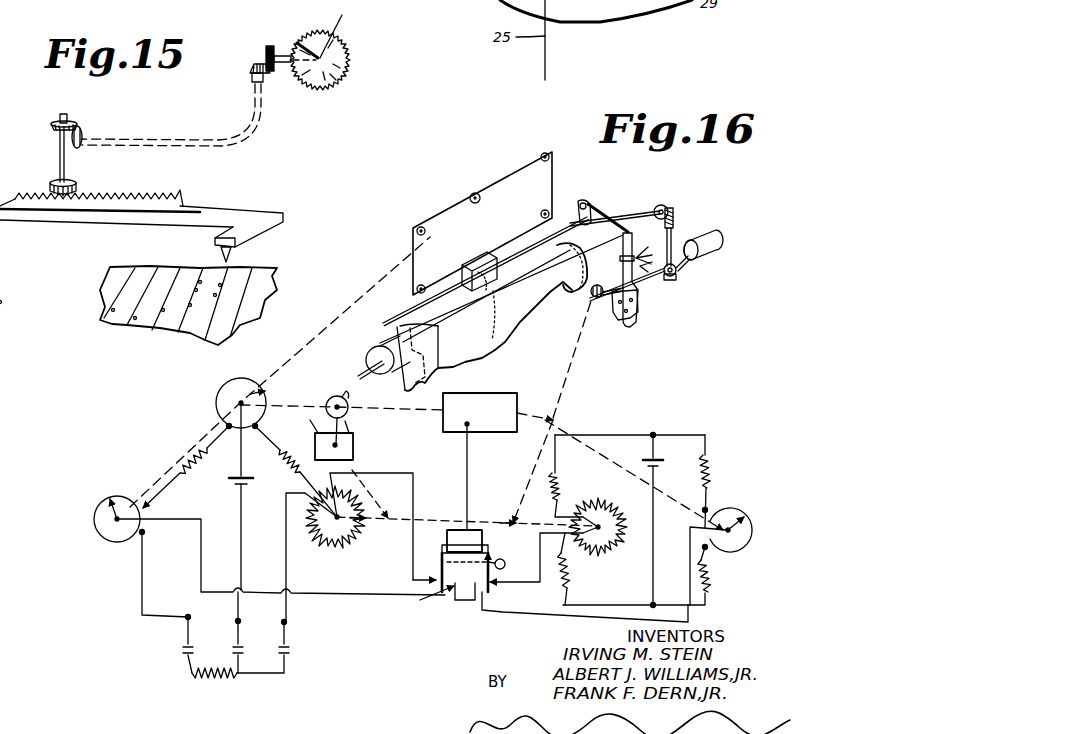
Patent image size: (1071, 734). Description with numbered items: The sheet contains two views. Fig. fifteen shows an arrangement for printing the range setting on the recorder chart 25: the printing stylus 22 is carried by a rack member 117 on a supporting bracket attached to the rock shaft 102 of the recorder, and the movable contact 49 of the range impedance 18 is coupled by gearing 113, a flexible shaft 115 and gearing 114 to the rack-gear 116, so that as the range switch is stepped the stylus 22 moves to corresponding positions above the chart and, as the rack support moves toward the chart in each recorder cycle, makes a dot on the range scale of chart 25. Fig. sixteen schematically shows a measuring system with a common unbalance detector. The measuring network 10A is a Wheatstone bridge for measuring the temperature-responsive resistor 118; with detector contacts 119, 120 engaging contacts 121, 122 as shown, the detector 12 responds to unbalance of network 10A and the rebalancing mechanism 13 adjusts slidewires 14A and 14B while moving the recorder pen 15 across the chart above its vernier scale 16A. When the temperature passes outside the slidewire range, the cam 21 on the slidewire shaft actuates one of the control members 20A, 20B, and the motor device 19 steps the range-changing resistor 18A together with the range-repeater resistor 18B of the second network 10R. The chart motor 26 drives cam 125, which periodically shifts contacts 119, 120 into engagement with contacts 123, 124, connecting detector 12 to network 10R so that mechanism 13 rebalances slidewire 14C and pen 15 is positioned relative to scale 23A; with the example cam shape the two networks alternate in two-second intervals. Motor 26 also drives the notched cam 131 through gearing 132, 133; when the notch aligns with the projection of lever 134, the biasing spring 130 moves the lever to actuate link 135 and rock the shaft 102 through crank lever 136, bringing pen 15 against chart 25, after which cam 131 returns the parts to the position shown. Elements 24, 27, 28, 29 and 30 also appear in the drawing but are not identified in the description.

In FIG. 15, the gearing 113 is at (258, 63).
In FIG. 15, the movable contact 49 is at (343, 35).
In FIG. 15, the impedance 18 is at (351, 57).
In FIG. 15, the gearing 114 is at (78, 126).
In FIG. 15, the flexible shaft 115 is at (150, 146).
In FIG. 15, the rack-gear 116 is at (80, 182).
In FIG. 15, the rack member 117 is at (175, 194).
In FIG. 15, the printing stylus 22 is at (236, 250).
In FIG. 15, the chart 25 is at (110, 280).
In FIG. 16, the chart 25 is at (532, 322).
In FIG. 16, the rock shaft 102 is at (563, 222).
In FIG. 16, the mounting plate hole 30 is at (483, 198).
In FIG. 16, the crank lever 136 is at (601, 202).
In FIG. 16, the link 135 is at (603, 213).
In FIG. 16, the biasing spring 130 is at (645, 280).
In FIG. 16, the lever 134 is at (621, 260).
In FIG. 16, the gearing 132 is at (624, 281).
In FIG. 16, the notched disk or cam 131 is at (620, 317).
In FIG. 16, the gearing 133 is at (590, 335).
In FIG. 16, the chart motor 26 is at (706, 252).
In FIG. 16, the light beam 27 is at (353, 303).
In FIG. 16, the recorder pen 15 is at (501, 280).
In FIG. 16, the vernier scale 16A is at (508, 315).
In FIG. 16, the feed roller 29 is at (368, 356).
In FIG. 16, the scale 23A is at (424, 389).
In FIG. 16, the cam 21 is at (341, 392).
In FIG. 16, the control member 20A is at (316, 432).
In FIG. 16, the control member 20B is at (352, 429).
In FIG. 16, the motor device 19 is at (353, 449).
In FIG. 16, the rebalancing mechanism 13 is at (497, 421).
In FIG. 16, the conductor 24 is at (470, 476).
In FIG. 16, the slidewire 14A is at (219, 393).
In FIG. 16, the slidewire 14B is at (97, 527).
In FIG. 16, the measuring network 10A is at (280, 534).
In FIG. 16, the light beam 28 is at (370, 495).
In FIG. 16, the range-changing resistor 18A is at (320, 560).
In FIG. 16, the detector 12 is at (475, 551).
In FIG. 16, the contact 121 is at (413, 582).
In FIG. 16, the detector contact 119 is at (440, 591).
In FIG. 16, the contact 123 is at (455, 590).
In FIG. 16, the contact 122 is at (481, 594).
In FIG. 16, the detector contact 120 is at (486, 592).
In FIG. 16, the contact 124 is at (492, 590).
In FIG. 16, the cam 125 is at (505, 567).
In FIG. 16, the range-repeater network 10R is at (688, 558).
In FIG. 16, the range-repeater resistor 18B is at (606, 560).
In FIG. 16, the slidewire 14C is at (728, 553).
In FIG. 16, the temperature-responsive resistor 118 is at (212, 680).